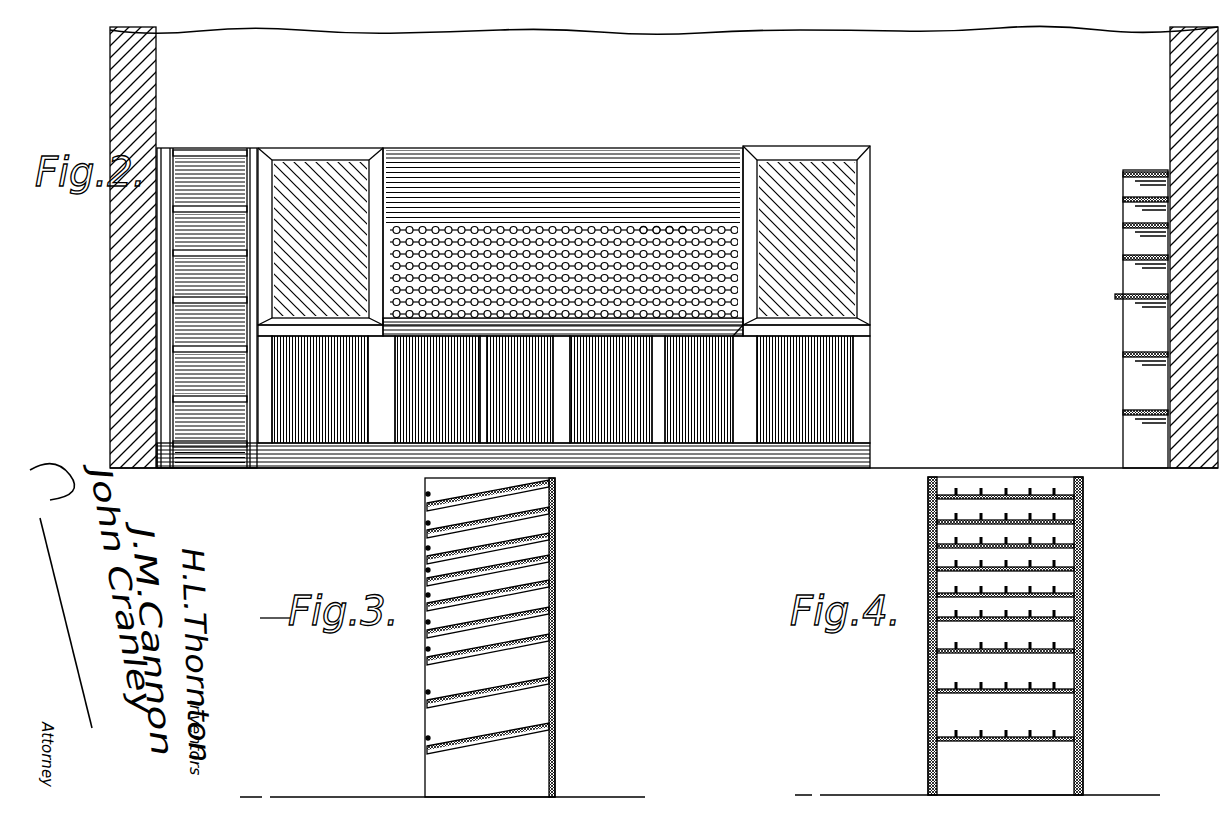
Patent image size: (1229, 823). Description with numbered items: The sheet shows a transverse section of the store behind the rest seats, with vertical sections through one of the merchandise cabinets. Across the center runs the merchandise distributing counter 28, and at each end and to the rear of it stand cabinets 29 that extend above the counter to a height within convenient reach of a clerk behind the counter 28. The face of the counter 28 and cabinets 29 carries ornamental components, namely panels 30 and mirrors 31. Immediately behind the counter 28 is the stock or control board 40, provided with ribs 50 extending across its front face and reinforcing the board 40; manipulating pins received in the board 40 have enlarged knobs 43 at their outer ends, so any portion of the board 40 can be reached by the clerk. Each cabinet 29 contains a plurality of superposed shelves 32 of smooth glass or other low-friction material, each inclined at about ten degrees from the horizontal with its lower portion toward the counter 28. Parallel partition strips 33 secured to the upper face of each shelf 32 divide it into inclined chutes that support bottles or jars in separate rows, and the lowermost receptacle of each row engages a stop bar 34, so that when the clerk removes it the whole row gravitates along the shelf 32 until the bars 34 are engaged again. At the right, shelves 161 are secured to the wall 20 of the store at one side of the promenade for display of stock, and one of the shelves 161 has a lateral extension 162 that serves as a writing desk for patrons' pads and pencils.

In FIG. 2, the wall 20 is at (118, 338).
In FIG. 2, the merchandise distributing counter 28 is at (700, 322).
In FIG. 2, the cabinet 29 is at (282, 148).
In FIG. 3, the cabinet 29 is at (556, 655).
In FIG. 4, the cabinet 29 is at (1085, 628).
In FIG. 2, the panel 30 is at (353, 430).
In FIG. 2, the mirror 31 is at (330, 176).
In FIG. 3, the shelf 32 is at (427, 661).
In FIG. 4, the shelf 32 is at (1048, 521).
In FIG. 3, the partition strip 33 is at (522, 561).
In FIG. 4, the partition strip 33 is at (953, 489).
In FIG. 3, the stop bar 34 is at (428, 522).
In FIG. 2, the stock or control board 40 is at (694, 224).
In FIG. 2, the knob 43 is at (660, 227).
In FIG. 2, the rib 50 is at (486, 224).
In FIG. 2, the shelf 161 is at (1123, 199).
In FIG. 2, the lateral extension 162 is at (1115, 296).